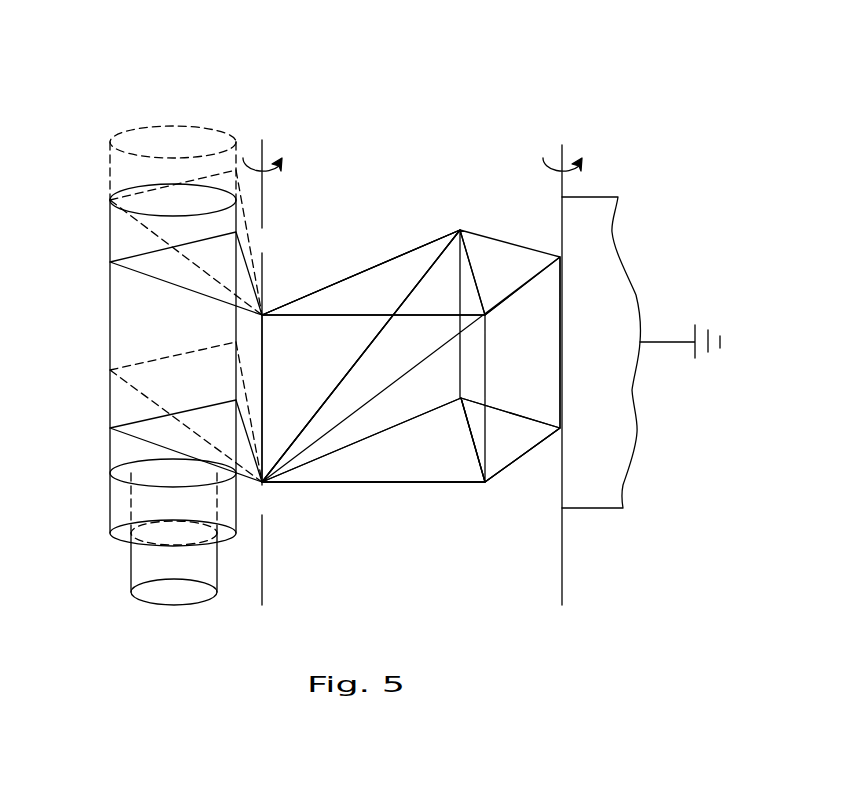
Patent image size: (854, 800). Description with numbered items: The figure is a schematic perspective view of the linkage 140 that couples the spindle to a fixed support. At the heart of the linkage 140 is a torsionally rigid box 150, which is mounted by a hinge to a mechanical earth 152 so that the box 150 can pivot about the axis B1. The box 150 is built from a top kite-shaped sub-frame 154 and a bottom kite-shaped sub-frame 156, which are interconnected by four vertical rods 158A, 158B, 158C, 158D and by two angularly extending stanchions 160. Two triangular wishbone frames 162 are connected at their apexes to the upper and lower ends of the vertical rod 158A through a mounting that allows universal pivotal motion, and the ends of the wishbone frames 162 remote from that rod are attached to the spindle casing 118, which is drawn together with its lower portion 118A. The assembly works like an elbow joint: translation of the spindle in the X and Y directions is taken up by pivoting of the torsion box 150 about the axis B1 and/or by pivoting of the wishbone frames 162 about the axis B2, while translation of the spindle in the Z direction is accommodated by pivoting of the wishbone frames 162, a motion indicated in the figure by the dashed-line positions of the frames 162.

The spindle casing 118 is at (115, 501).
The shaft end portion 118A is at (143, 566).
The linkage 140 is at (498, 225).
The torsionally rigid box 150 is at (478, 186).
The mechanical earth 152 is at (660, 342).
The top kite-shaped sub-frame 154 is at (446, 237).
The bottom kite-shaped sub-frame 156 is at (403, 483).
The vertical rod 158A is at (265, 329).
The vertical rod 158B is at (467, 375).
The vertical rod 158C is at (467, 375).
The vertical rod 158D is at (562, 393).
The angularly extending stanchion 160 is at (379, 393).
The triangular wishbone frame 162 is at (140, 274).
The axis B1 is at (562, 152).
The axis B2 is at (262, 141).